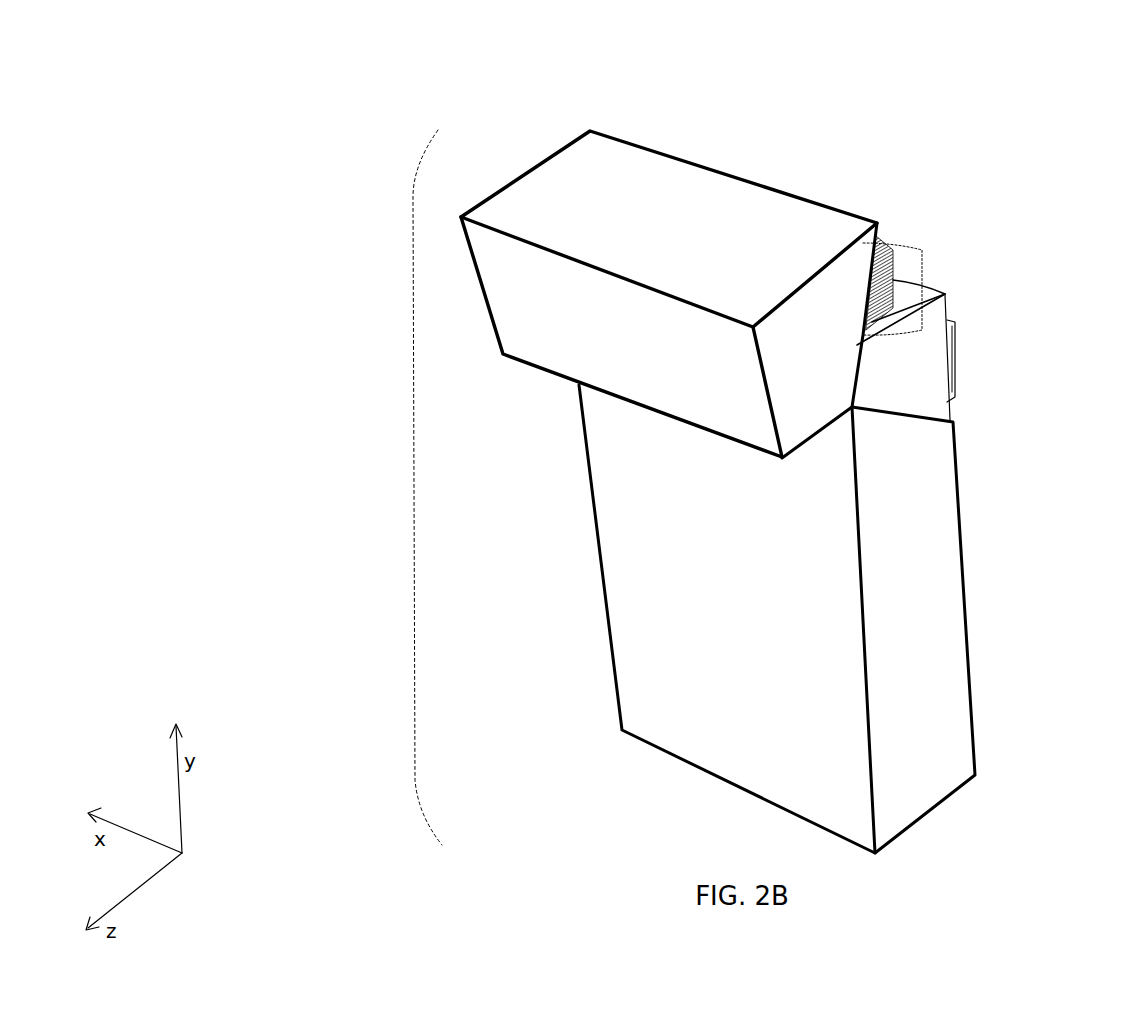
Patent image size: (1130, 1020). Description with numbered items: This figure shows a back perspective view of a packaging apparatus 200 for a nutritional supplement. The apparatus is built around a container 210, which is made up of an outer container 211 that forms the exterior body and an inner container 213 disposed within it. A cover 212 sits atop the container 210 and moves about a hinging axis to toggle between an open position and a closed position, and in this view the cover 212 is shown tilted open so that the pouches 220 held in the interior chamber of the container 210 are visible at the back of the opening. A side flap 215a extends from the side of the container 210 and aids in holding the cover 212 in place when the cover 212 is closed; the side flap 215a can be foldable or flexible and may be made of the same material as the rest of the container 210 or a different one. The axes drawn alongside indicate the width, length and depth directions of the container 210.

The packaging apparatus 200 is at (330, 128).
The container 210 is at (412, 488).
The outer container 211 is at (898, 648).
The cover 212 is at (632, 162).
The inner container 213 is at (897, 390).
The side flap 215a is at (953, 358).
The pouches 220 is at (922, 292).